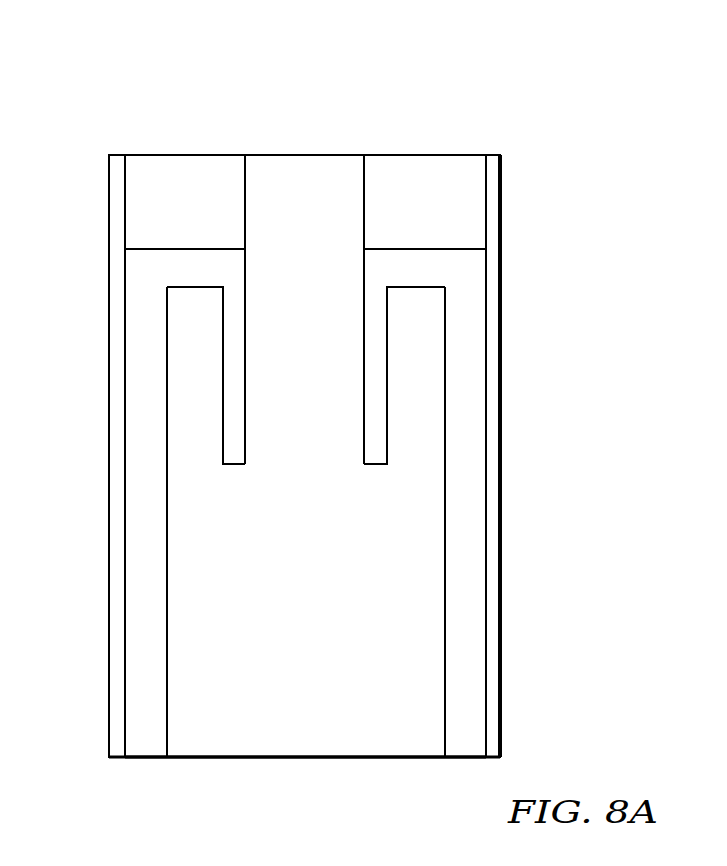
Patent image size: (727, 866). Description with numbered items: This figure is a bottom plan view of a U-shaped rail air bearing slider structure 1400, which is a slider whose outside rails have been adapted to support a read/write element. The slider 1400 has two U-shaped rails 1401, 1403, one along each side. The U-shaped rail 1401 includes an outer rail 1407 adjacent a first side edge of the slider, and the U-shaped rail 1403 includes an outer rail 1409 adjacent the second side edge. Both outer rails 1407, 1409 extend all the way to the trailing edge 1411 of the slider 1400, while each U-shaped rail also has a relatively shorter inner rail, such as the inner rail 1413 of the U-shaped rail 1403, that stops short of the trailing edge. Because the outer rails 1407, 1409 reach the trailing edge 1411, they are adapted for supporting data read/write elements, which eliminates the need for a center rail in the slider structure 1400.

The U-shaped rail air bearing slider structure 1400 is at (497, 127).
The U-shaped rail 1401 is at (467, 300).
The U-shaped rail 1403 is at (148, 350).
The outer rail 1407 is at (468, 613).
The outer rail 1409 is at (145, 617).
The trailing edge 1411 is at (383, 466).
The inner rail 1413 is at (235, 466).